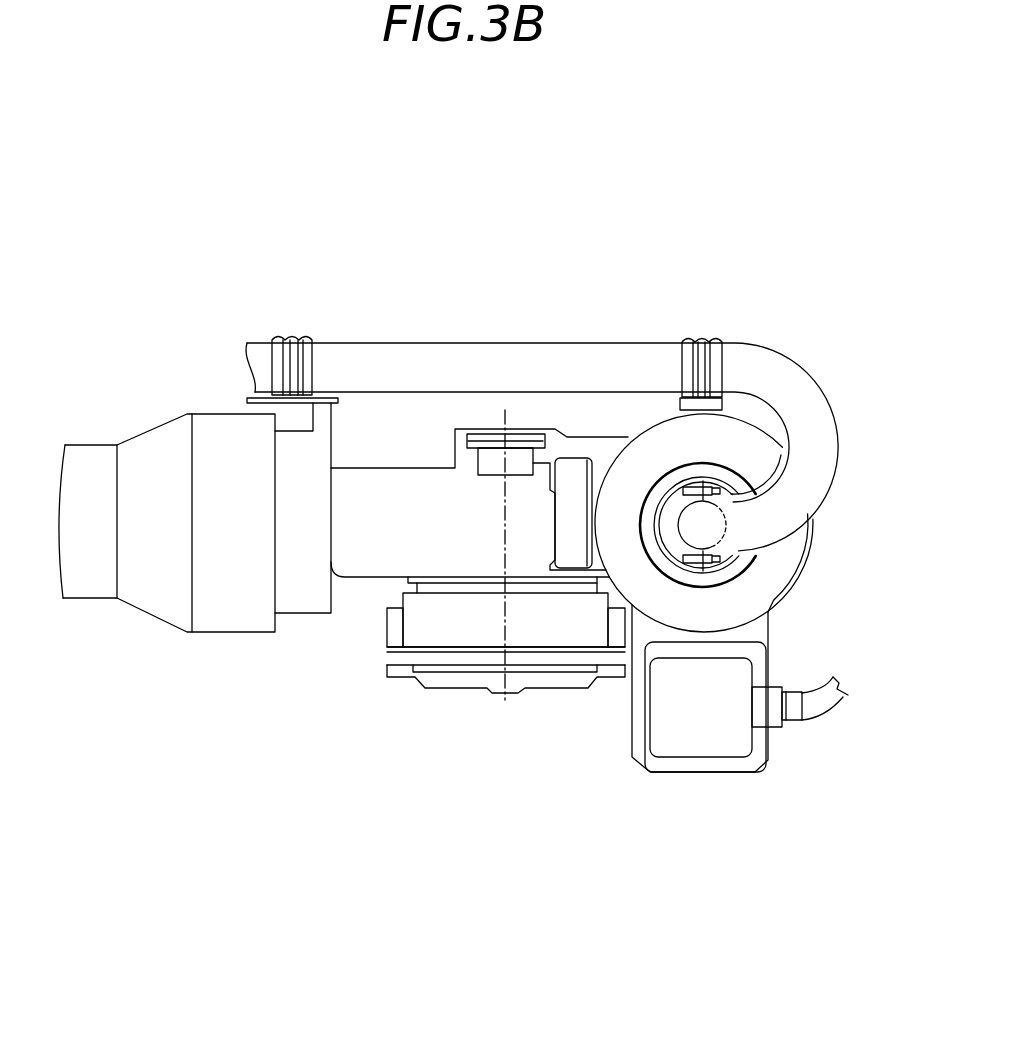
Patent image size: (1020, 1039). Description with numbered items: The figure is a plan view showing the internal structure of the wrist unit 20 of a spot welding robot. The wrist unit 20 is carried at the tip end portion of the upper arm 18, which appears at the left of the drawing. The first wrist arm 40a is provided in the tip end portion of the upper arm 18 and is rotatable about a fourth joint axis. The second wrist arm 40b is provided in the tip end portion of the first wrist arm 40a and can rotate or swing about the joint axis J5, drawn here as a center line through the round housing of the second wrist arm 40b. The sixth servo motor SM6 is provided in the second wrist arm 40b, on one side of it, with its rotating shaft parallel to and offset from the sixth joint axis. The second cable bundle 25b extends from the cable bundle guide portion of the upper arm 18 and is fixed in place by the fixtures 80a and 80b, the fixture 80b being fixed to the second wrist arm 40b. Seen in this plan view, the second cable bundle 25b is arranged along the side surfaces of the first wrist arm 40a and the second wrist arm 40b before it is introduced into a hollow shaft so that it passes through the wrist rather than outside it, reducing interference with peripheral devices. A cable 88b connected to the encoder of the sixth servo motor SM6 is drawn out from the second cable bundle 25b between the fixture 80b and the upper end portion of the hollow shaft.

The upper arm 18 is at (142, 443).
The wrist unit 20 is at (750, 203).
The second cable bundle 25b is at (770, 344).
The first wrist arm 40a is at (390, 573).
The second wrist arm 40b is at (807, 563).
The fixture 80a is at (290, 335).
The fixture 80b is at (703, 336).
The cable 88b is at (820, 710).
The joint axis J5 is at (502, 603).
The sixth servo motor SM6 is at (695, 760).